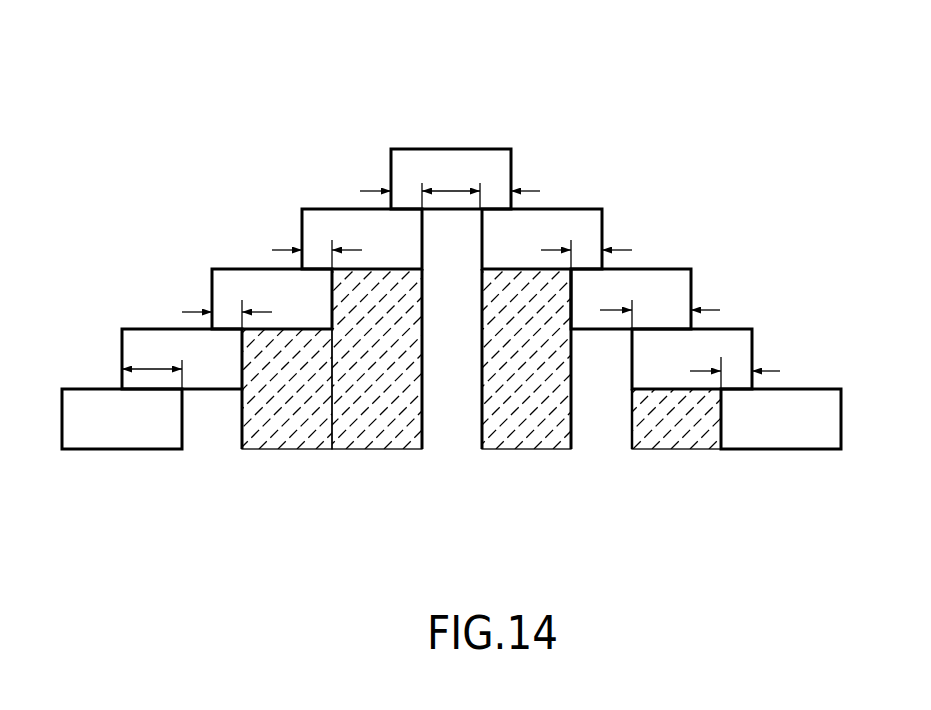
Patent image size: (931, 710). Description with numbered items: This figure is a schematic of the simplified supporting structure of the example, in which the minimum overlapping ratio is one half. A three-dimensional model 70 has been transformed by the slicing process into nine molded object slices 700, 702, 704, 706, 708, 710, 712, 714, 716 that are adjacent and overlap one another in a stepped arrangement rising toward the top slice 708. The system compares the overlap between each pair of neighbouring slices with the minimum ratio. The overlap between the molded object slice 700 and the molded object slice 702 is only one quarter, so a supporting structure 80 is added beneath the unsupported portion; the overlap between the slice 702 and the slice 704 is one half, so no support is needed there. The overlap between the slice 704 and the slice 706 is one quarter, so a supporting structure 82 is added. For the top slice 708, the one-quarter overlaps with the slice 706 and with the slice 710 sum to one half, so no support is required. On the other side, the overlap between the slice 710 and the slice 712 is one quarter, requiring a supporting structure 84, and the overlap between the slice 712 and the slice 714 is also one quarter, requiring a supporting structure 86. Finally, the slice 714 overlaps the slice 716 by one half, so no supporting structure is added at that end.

The 3D model 70 is at (517, 57).
The molded object slice 700 is at (830, 400).
The molded object slice 702 is at (742, 337).
The molded object slice 704 is at (652, 280).
The molded object slice 706 is at (563, 218).
The molded object slice 708 is at (447, 160).
The molded object slice 710 is at (335, 218).
The molded object slice 712 is at (233, 278).
The molded object slice 714 is at (148, 335).
The molded object slice 716 is at (85, 400).
The supporting structure 80 is at (653, 451).
The supporting structure 82 is at (516, 451).
The supporting structure 84 is at (376, 451).
The supporting structure 86 is at (288, 451).